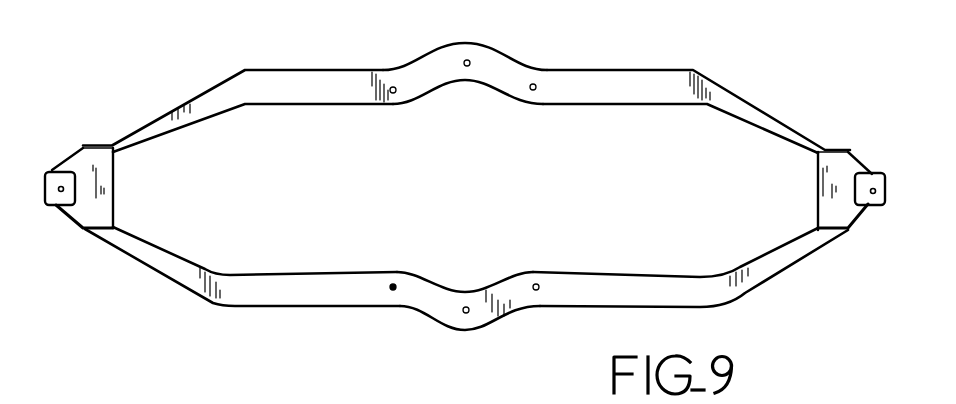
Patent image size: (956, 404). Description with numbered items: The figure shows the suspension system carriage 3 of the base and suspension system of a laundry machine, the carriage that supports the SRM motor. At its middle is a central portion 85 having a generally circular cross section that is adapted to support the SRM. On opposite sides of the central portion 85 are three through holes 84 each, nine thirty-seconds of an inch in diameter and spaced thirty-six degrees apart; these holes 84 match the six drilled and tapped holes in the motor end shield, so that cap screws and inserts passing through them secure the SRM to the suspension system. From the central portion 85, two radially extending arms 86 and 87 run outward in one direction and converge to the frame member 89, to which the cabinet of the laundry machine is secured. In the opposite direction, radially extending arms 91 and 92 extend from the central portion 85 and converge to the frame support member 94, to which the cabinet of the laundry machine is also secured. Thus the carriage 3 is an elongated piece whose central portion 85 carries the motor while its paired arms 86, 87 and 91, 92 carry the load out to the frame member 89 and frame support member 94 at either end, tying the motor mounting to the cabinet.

The suspension system carriage 3 is at (462, 183).
The through holes 84 is at (393, 87).
The central portion 85 is at (453, 253).
The radially extending arm 86 is at (285, 83).
The radially extending arm 87 is at (262, 293).
The frame member 89 is at (97, 198).
The radially extending arm 91 is at (682, 83).
The radially extending arm 92 is at (698, 292).
The frame support member 94 is at (840, 202).